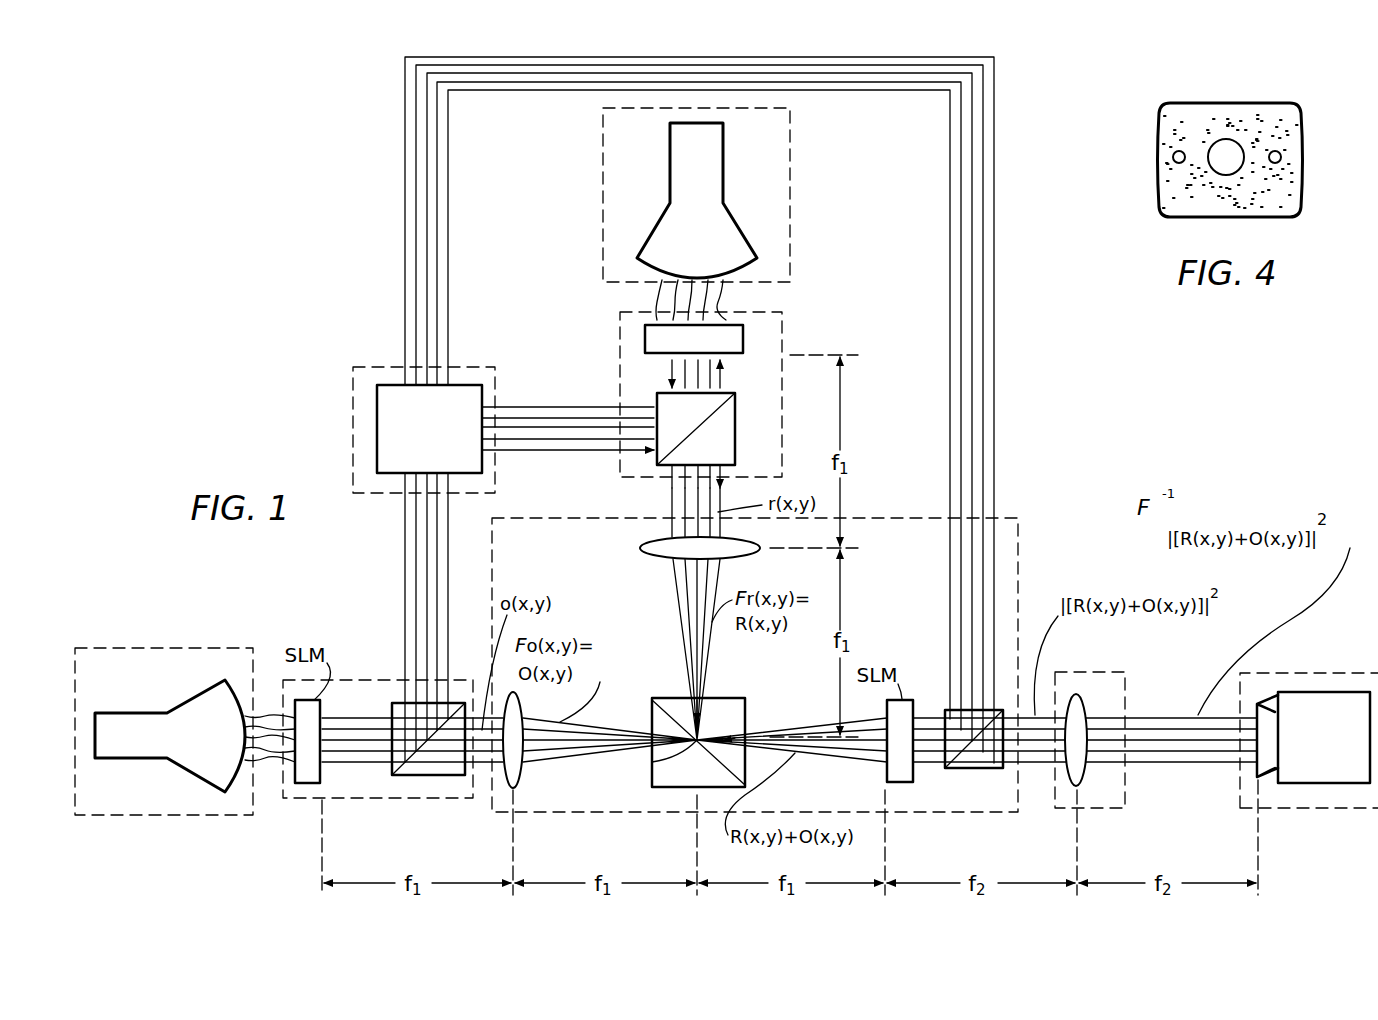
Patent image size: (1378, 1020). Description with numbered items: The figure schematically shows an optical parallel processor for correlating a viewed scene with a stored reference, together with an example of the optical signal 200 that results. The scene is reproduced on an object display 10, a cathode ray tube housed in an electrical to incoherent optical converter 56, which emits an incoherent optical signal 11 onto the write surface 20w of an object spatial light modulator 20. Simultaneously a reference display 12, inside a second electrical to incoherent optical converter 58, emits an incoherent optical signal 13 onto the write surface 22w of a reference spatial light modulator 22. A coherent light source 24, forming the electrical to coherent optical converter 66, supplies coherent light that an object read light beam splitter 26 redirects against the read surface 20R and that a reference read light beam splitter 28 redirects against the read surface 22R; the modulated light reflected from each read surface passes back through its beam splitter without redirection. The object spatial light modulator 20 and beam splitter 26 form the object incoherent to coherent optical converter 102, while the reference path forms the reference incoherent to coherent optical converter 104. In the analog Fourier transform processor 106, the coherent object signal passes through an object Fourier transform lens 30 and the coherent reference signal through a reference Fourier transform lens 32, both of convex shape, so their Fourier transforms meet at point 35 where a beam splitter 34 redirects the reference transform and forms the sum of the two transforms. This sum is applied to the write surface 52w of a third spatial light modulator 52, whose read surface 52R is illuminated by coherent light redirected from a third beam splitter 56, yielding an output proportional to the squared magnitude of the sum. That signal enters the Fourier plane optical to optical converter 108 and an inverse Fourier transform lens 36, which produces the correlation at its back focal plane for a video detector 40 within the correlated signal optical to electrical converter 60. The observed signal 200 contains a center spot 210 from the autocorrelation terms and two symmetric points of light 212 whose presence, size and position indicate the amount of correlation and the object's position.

In FIG. 1, the object display 10 is at (195, 782).
In FIG. 1, the incoherent optical signal 11 is at (270, 712).
In FIG. 1, the reference display 12 is at (745, 233).
In FIG. 1, the incoherent optical signal 13 is at (730, 285).
In FIG. 1, the object spatial light modulator 20 is at (318, 785).
In FIG. 1, the write surface 20w is at (292, 768).
In FIG. 1, the read surface 20R is at (322, 772).
In FIG. 1, the reference spatial light modulator 22 is at (745, 336).
In FIG. 1, the write surface 22w is at (735, 318).
In FIG. 1, the read surface 22R is at (735, 355).
In FIG. 1, the coherent light source 24 is at (483, 393).
In FIG. 1, the object read light beam splitter 26 is at (425, 777).
In FIG. 1, the reference read light beam splitter 28 is at (735, 442).
In FIG. 1, the object Fourier transform lens 30 is at (520, 775).
In FIG. 1, the reference Fourier transform lens 32 is at (748, 540).
In FIG. 1, the beam splitter 34 is at (680, 788).
In FIG. 1, the point 35 is at (660, 762).
In FIG. 1, the inverse Fourier transform lens 36 is at (1085, 772).
In FIG. 1, the video detector 40 is at (1338, 784).
In FIG. 1, the third spatial light modulator 52 is at (912, 700).
In FIG. 1, the write surface 52w is at (885, 770).
In FIG. 1, the read surface 52R is at (915, 770).
In FIG. 1, the third beam splitter 56 is at (200, 648).
In FIG. 1, the electrical to incoherent optical converter 58 is at (791, 148).
In FIG. 1, the correlated signal optical to electrical converter 60 is at (1330, 673).
In FIG. 1, the electrical to coherent optical converter 66 is at (482, 367).
In FIG. 1, the object incoherent to coherent optical converter 102 is at (355, 680).
In FIG. 1, the reference incoherent to coherent optical converter 104 is at (620, 340).
In FIG. 1, the analog Fourier transform processor 106 is at (580, 492).
In FIG. 1, the Fourier plane optical to optical converter 108 is at (1118, 672).
In FIG. 4, the optical signal 200 is at (1306, 108).
In FIG. 4, the center spot 210 is at (1232, 140).
In FIG. 4, the points of light 212 is at (1174, 155).